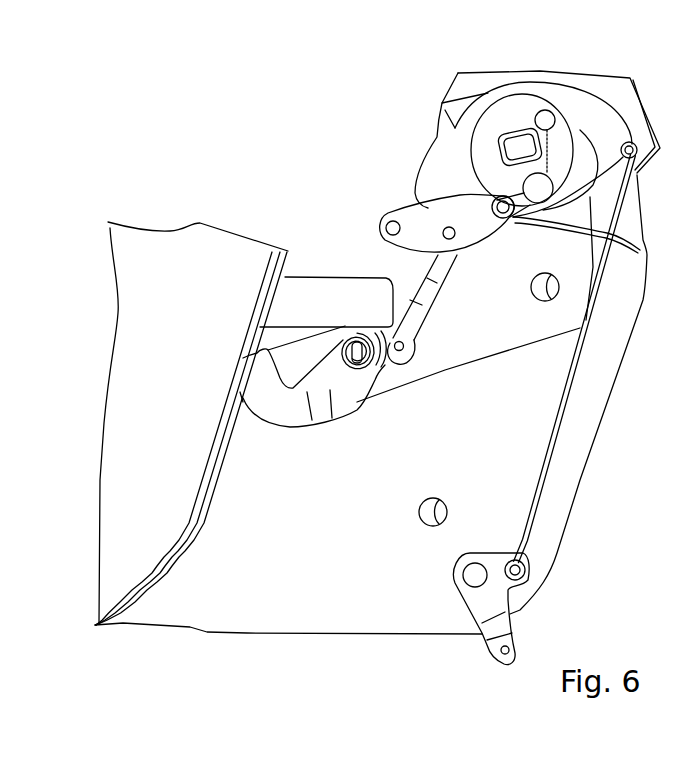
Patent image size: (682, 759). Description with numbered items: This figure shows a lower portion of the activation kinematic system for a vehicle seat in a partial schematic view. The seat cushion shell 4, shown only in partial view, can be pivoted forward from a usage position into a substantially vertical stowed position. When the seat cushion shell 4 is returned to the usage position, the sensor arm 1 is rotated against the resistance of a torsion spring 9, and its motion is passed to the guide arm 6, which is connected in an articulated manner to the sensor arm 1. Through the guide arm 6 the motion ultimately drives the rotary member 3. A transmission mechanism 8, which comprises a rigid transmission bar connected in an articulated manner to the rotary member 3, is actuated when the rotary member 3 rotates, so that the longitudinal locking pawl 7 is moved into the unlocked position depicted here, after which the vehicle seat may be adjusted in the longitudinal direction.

The sensor arm 1 is at (270, 405).
The rotary member 3 is at (432, 177).
The seat cushion shell 4 is at (303, 300).
The guide arm 6 is at (408, 312).
The longitudinal locking pawl 7 is at (498, 625).
The transmission mechanism 8 is at (575, 365).
The torsion spring 9 is at (348, 331).